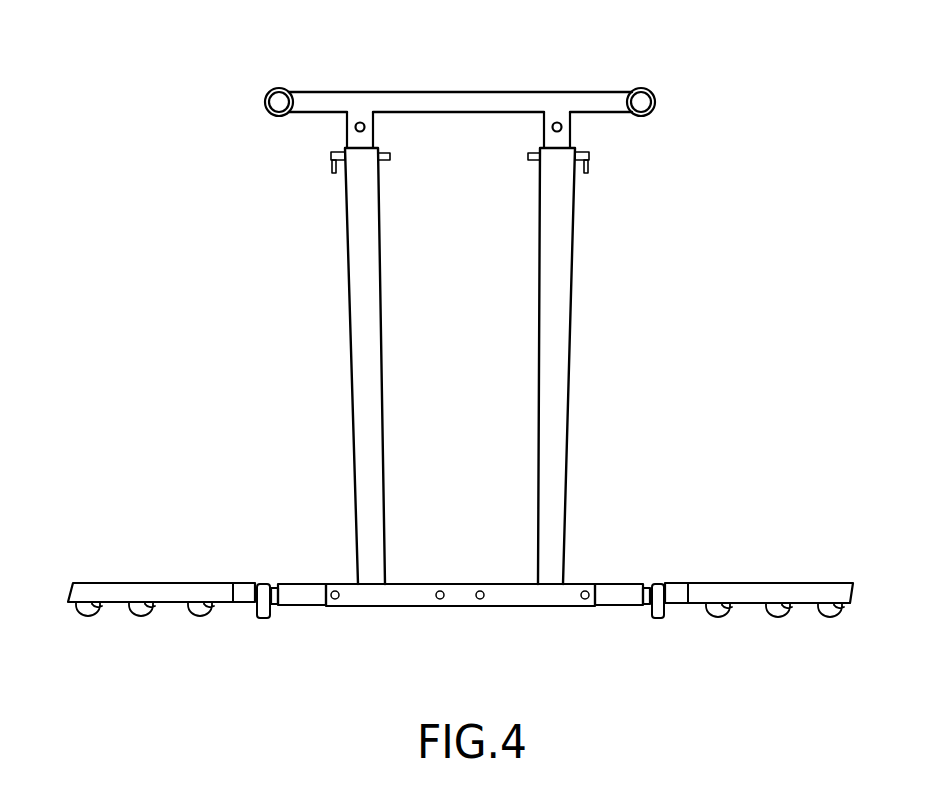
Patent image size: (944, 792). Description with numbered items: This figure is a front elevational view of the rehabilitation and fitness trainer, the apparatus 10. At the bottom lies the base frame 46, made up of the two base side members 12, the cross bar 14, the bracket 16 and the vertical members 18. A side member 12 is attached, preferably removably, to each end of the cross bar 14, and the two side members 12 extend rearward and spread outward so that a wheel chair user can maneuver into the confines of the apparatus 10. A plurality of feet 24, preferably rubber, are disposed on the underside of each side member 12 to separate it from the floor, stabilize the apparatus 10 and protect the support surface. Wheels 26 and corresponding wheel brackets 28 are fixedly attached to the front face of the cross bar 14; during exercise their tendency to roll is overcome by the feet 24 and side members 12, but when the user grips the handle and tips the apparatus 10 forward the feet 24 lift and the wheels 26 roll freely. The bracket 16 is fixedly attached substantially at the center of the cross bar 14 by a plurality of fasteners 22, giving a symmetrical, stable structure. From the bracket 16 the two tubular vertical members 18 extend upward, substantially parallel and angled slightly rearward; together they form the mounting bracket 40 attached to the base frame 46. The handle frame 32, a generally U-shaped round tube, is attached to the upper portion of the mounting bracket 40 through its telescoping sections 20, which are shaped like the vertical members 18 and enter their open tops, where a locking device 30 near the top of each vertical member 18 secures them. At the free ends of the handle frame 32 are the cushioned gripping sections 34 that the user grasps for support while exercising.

The apparatus 10 is at (724, 259).
The base side member 12 is at (82, 593).
The cross bar 14 is at (615, 592).
The bracket 16 is at (458, 592).
The vertical member 18 is at (548, 250).
The telescoping section 20 is at (548, 137).
The fastener 22 is at (437, 600).
The foot 24 is at (98, 614).
The wheel 26 is at (260, 618).
The wheel bracket 28 is at (255, 585).
The locking device 30 is at (536, 166).
The handle frame 32 is at (578, 96).
The gripping section 34 is at (266, 93).
The mounting bracket 40 is at (568, 419).
The base frame 46 is at (310, 581).